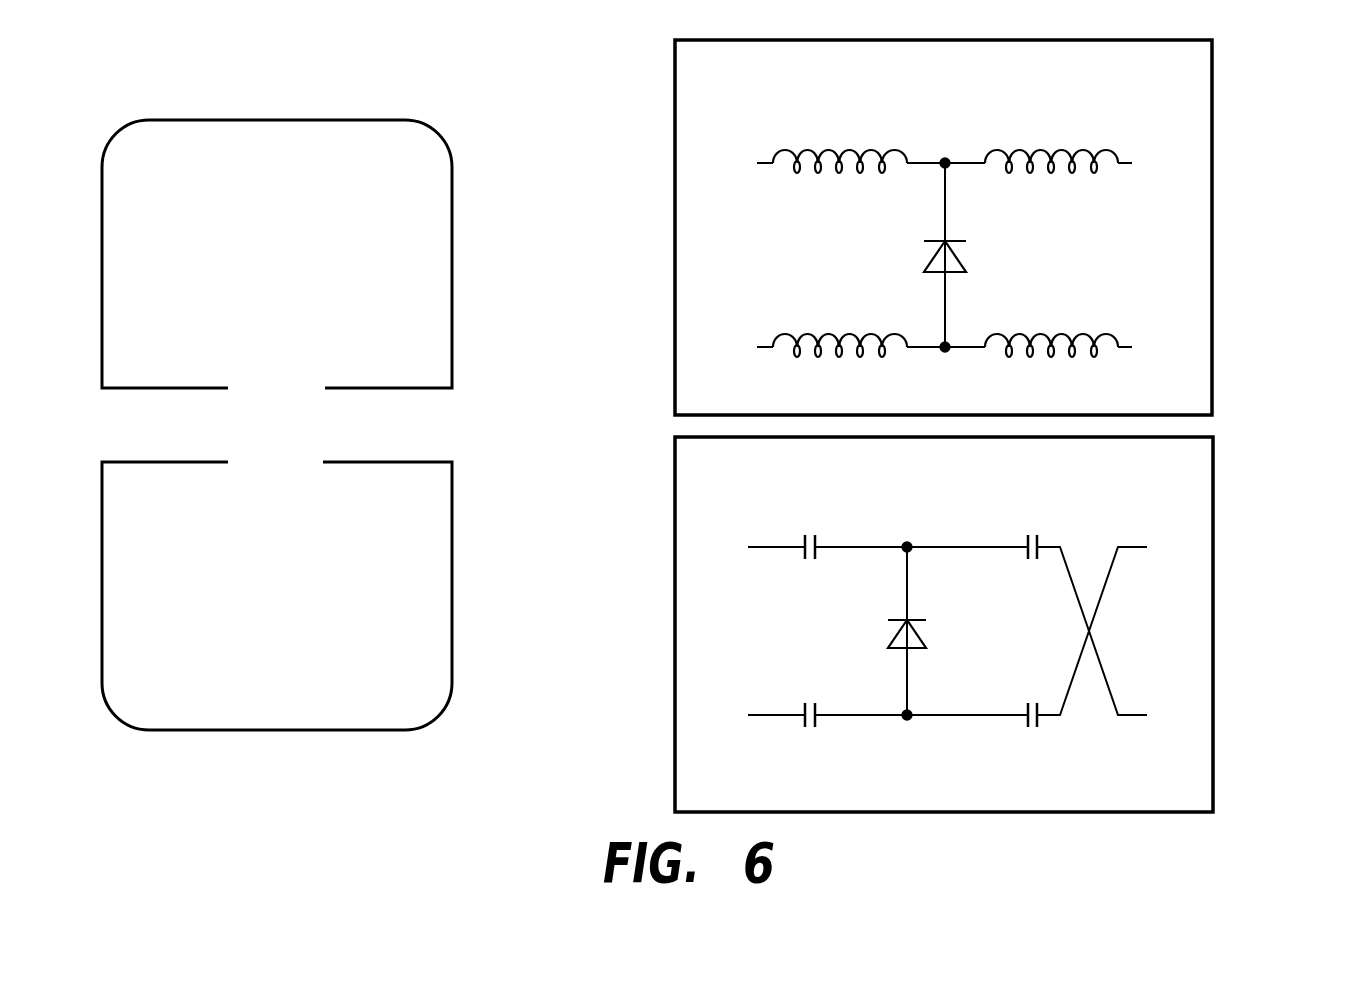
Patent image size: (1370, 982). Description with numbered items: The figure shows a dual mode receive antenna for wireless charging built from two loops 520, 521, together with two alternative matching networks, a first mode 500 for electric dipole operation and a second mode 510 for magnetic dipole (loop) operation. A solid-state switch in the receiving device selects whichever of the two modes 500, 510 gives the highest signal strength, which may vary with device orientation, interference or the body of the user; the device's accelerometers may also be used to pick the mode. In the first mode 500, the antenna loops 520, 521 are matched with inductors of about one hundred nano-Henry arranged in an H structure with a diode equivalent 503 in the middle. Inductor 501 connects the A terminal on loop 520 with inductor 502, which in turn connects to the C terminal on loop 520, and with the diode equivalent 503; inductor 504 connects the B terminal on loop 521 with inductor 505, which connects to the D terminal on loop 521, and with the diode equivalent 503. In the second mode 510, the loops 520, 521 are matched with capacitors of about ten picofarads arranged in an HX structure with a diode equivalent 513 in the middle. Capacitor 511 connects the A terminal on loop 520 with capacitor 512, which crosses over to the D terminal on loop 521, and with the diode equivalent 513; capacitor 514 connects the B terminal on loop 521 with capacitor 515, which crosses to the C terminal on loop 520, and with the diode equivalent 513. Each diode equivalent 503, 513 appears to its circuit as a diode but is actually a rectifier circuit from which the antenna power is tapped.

The first mode 500 is at (1234, 120).
The inductor 501 is at (805, 149).
The inductor 502 is at (1082, 148).
The diode equivalent 503 is at (962, 263).
The inductor 504 is at (795, 354).
The inductor 505 is at (1075, 356).
The second mode 510 is at (1237, 460).
The capacitor 511 is at (805, 538).
The capacitor 512 is at (1028, 538).
The diode equivalent 513 is at (924, 641).
The capacitor 514 is at (805, 724).
The capacitor 515 is at (1028, 724).
The loop 520 is at (436, 137).
The loop 521 is at (452, 462).